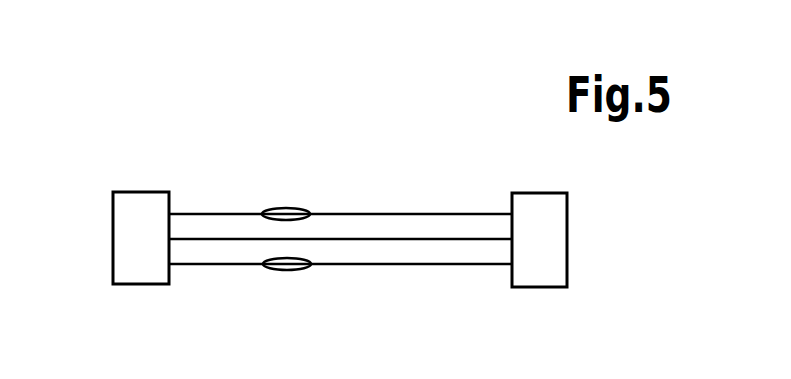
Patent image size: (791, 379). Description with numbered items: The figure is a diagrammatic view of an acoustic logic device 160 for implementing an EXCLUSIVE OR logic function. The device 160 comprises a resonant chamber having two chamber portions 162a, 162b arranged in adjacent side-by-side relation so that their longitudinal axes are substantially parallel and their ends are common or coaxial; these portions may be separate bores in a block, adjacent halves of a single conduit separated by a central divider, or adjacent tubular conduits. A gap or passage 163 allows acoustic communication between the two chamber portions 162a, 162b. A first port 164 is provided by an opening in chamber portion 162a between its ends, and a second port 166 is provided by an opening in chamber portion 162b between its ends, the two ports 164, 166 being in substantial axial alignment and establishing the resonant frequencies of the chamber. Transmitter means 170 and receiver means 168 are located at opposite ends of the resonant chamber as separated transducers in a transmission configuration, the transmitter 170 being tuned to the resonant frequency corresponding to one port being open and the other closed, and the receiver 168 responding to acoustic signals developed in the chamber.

The acoustic logic device 160 is at (340, 221).
The chamber portion 162a is at (215, 221).
The chamber portion 162b is at (455, 258).
The gap or passage 163 is at (345, 240).
The first port 164 is at (297, 212).
The second port 166 is at (260, 271).
The receiver means 168 is at (568, 200).
The transmitter means 170 is at (113, 200).